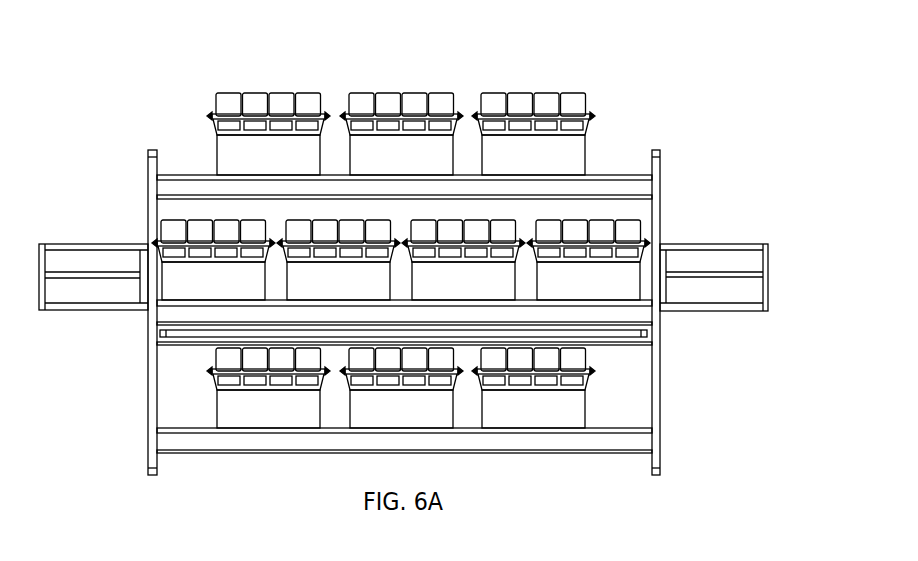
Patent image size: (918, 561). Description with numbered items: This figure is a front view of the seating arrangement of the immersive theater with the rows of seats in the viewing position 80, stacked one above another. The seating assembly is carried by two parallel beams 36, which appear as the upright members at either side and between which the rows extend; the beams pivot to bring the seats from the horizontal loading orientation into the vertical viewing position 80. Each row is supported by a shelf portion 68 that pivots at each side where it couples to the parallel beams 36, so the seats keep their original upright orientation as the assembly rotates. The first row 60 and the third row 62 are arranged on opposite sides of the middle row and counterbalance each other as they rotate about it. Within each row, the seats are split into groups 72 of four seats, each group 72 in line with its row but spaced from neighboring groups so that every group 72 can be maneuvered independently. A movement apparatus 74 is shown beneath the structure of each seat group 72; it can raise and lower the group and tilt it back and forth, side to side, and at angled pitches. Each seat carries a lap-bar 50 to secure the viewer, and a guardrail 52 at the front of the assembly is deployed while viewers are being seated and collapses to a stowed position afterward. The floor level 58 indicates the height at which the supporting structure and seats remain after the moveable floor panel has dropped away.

The parallel beams 36 is at (143, 430).
The lap-bar 50 is at (541, 112).
The guardrail 52 is at (720, 269).
The floor level 58 is at (635, 190).
The first row 60 is at (236, 419).
The third row 62 is at (205, 151).
The shelf portion 68 is at (607, 436).
The group of seats 72 is at (281, 91).
The movement apparatus 74 is at (566, 158).
The viewing position 80 is at (428, 69).